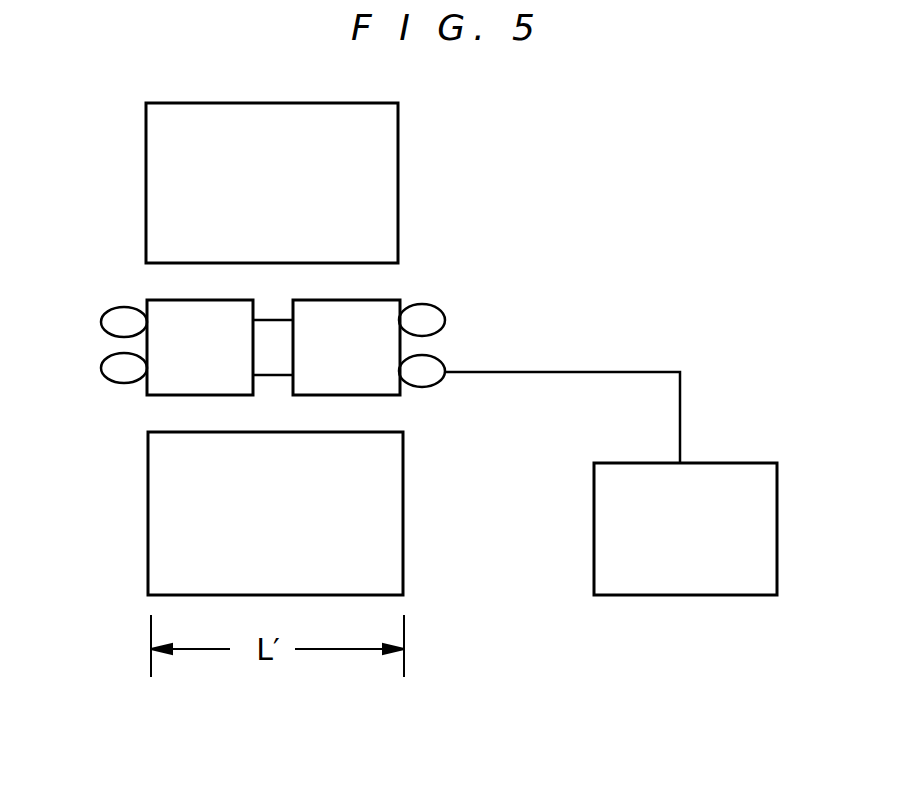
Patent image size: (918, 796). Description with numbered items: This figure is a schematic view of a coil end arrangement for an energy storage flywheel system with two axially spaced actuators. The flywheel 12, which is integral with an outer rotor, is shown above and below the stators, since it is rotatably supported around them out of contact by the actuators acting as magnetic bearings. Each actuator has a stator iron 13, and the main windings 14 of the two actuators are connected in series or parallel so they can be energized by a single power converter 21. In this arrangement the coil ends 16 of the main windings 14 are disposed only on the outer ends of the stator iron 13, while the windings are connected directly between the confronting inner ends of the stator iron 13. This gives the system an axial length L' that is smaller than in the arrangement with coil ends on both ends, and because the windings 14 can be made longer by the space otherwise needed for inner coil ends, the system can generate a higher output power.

The flywheel 12 is at (260, 205).
The stator iron 13 is at (182, 366).
The main windings 14 is at (268, 318).
The coil ends 16 is at (104, 380).
The power converter 21 is at (744, 596).